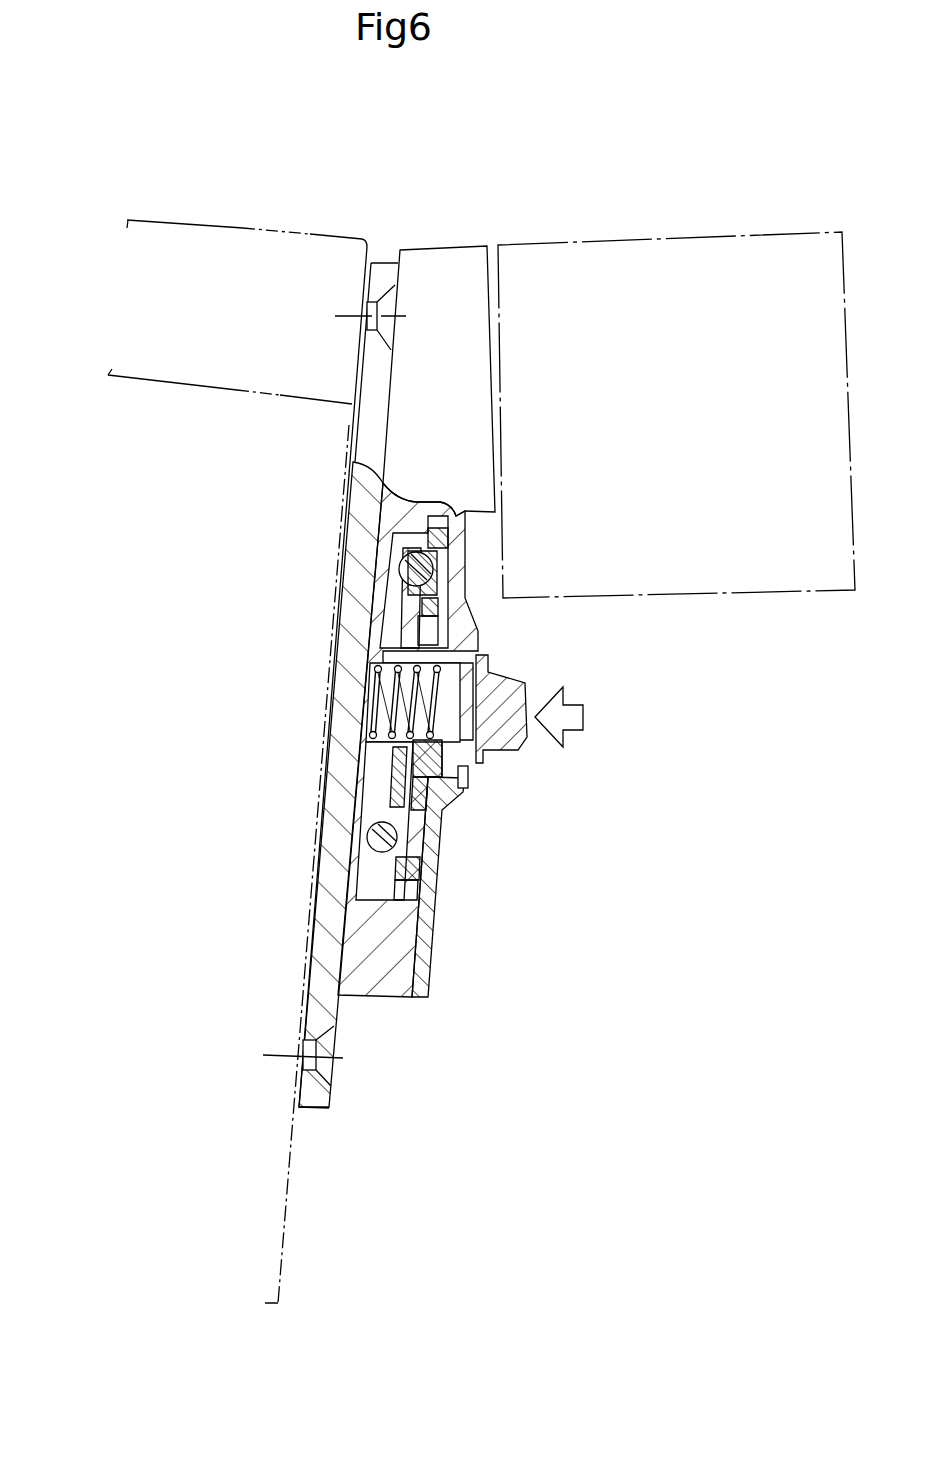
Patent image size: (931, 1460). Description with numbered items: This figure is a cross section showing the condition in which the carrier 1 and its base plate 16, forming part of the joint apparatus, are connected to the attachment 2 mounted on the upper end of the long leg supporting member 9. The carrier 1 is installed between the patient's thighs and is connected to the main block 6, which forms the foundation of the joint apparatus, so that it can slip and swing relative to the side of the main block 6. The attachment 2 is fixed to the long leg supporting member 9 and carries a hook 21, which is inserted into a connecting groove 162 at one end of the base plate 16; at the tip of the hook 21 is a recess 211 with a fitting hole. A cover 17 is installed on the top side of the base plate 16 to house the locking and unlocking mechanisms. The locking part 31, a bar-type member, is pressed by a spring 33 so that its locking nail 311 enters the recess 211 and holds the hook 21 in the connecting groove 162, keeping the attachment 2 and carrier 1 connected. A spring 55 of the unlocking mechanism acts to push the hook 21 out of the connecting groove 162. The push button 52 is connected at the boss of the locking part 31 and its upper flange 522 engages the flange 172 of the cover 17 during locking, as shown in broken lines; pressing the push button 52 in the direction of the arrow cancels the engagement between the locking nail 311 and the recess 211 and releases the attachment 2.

The carrier 1 is at (457, 247).
The attachment 2 is at (330, 1112).
The main block 6 is at (621, 240).
The long leg supporting member 9 is at (283, 233).
The base plate 16 is at (378, 996).
The connecting groove 162 is at (435, 937).
The cover 17 is at (421, 998).
The flange 172 is at (463, 790).
The hook 21 is at (430, 907).
The recess 211 is at (432, 883).
The locking part 31 is at (403, 777).
The locking nail 311 is at (420, 825).
The spring 33 is at (378, 690).
The push button 52 is at (527, 683).
The flange 522 is at (480, 776).
The spring 55 is at (400, 565).